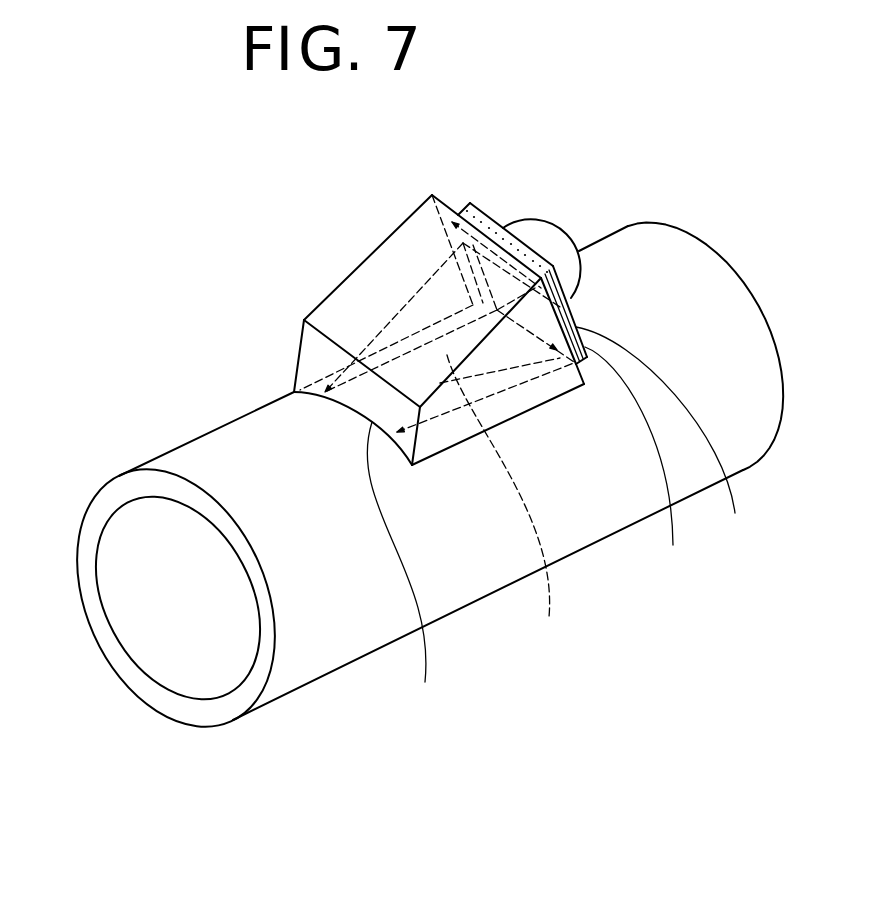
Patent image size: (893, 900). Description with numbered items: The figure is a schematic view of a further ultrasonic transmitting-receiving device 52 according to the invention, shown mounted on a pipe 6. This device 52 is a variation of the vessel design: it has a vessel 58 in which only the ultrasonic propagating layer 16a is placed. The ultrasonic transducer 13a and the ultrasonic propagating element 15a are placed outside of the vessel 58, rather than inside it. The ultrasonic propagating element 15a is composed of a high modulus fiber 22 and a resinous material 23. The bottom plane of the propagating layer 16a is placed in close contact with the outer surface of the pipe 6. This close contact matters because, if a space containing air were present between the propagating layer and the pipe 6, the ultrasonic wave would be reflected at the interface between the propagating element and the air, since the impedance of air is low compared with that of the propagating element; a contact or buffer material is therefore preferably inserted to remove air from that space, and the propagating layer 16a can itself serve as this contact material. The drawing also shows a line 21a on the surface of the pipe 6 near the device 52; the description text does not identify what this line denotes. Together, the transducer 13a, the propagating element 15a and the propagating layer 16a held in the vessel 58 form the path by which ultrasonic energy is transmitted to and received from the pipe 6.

The pipe 6 is at (340, 652).
The ultrasonic transmitting-receiving device 52 is at (388, 188).
The vessel 58 is at (347, 297).
The ultrasonic propagating element 15a is at (475, 192).
The ultrasonic transducer 13a is at (548, 235).
The ultrasonic propagating layer 16a is at (513, 507).
The positioning line 21a is at (411, 570).
The high modulus fiber 22 is at (641, 465).
The resinous material 23 is at (667, 435).